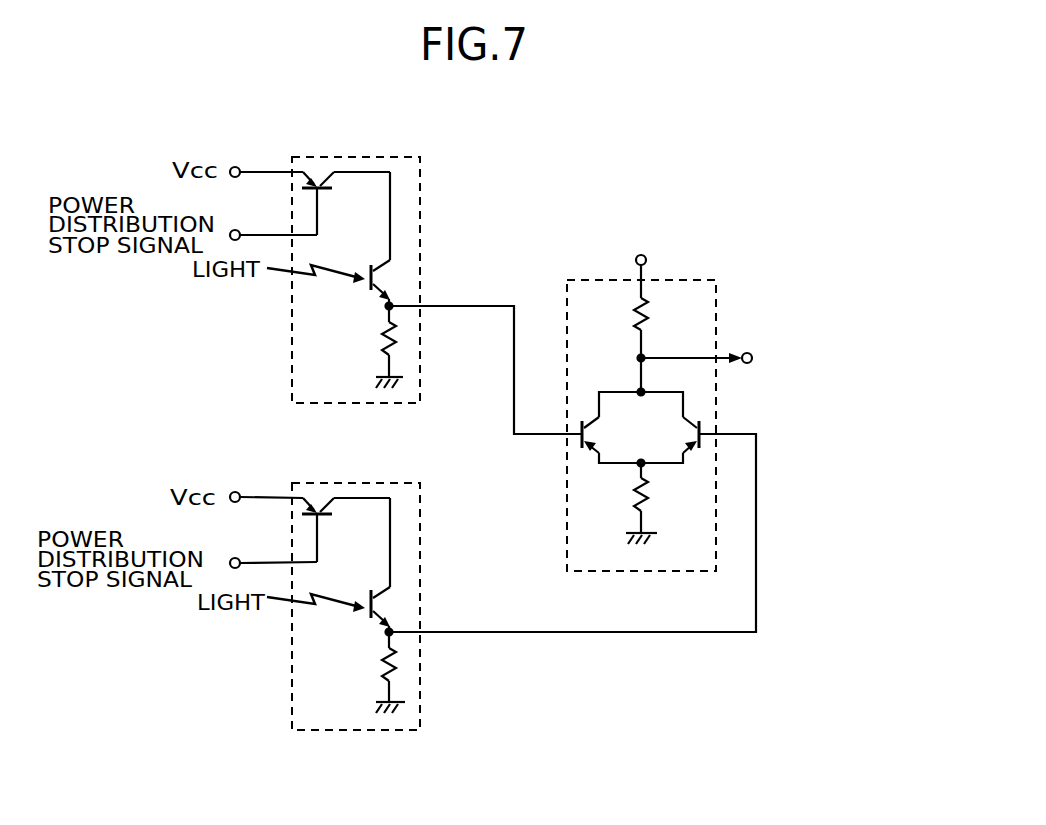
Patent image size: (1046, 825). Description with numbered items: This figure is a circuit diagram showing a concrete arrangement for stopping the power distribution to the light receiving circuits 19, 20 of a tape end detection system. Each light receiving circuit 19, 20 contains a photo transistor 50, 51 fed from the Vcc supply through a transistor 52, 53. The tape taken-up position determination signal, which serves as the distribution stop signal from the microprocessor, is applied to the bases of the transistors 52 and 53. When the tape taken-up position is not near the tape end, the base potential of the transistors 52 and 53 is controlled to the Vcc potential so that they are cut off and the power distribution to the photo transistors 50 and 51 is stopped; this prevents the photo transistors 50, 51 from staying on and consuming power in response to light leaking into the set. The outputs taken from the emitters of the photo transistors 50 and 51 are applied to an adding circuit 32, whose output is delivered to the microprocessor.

The light receiving circuit 19 is at (421, 202).
The light receiving circuit 20 is at (421, 538).
The adding circuit 32 is at (716, 330).
The photo transistor 50 is at (368, 282).
The photo transistor 51 is at (368, 609).
The transistor 52 is at (323, 192).
The transistor 53 is at (323, 518).